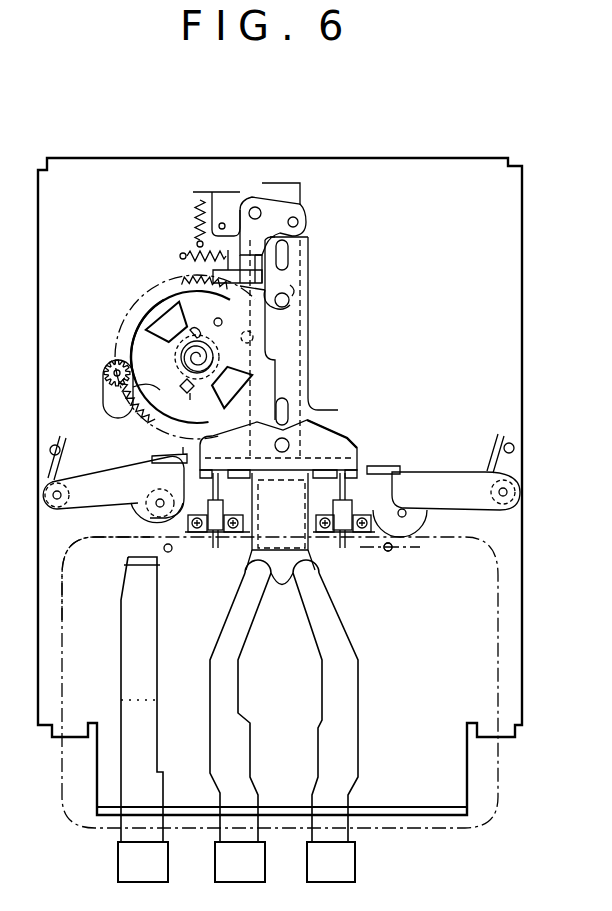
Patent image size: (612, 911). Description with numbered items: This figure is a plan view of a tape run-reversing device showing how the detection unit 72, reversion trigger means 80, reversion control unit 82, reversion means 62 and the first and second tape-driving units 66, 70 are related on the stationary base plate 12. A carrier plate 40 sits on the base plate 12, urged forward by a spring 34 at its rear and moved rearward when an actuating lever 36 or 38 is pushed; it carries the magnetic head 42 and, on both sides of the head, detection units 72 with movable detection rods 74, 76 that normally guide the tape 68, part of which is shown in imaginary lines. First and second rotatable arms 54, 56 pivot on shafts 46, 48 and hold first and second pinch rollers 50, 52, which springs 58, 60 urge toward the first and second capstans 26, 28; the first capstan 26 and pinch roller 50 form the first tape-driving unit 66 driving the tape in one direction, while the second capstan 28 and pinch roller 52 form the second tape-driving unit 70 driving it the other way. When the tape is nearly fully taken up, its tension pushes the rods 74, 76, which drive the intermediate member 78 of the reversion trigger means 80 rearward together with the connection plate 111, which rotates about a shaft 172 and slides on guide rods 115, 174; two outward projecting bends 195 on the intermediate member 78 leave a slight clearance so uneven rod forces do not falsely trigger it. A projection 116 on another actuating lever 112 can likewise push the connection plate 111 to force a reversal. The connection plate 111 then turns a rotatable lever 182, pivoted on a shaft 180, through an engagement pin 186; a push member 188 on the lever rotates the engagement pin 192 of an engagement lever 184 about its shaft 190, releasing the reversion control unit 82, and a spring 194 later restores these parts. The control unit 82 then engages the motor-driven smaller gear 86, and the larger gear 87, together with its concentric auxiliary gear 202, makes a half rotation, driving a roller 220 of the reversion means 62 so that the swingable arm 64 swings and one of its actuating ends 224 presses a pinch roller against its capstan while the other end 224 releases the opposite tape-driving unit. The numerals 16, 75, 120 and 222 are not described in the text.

The stationary base plate 12 is at (459, 183).
The base plate 16 is at (472, 795).
The first capstan 26 is at (392, 550).
The second capstan 28 is at (160, 562).
The spring 34 is at (197, 210).
The actuating lever 36 is at (228, 873).
The actuating lever 38 is at (318, 873).
The carrier plate 40 is at (220, 198).
The magnetic head 42 is at (280, 586).
The shaft 46 is at (515, 478).
The shaft 48 is at (45, 495).
The first pinch roller 50 is at (427, 516).
The second pinch roller 52 is at (125, 537).
The first rotatable arm 54 is at (467, 478).
The second rotatable arm 56 is at (131, 510).
The spring 58 is at (514, 449).
The spring 60 is at (48, 464).
The reversion means 62 is at (298, 425).
The swingable arm 64 is at (326, 425).
The first tape-driving unit 66 is at (420, 539).
The magnetic tape 68 is at (222, 548).
The second tape-driving unit 70 is at (150, 552).
The detection unit 72 is at (172, 550).
The detection rod 74 is at (342, 548).
The housing 75 is at (503, 373).
The detection rod 76 is at (214, 552).
The intermediate member 78 is at (358, 456).
The reversion trigger means 80 is at (316, 172).
The reversion control unit 82 is at (157, 281).
The smaller gear 86 is at (104, 365).
The larger gear 87 is at (148, 329).
The connection plate 111 is at (308, 352).
The actuating lever 112 is at (128, 873).
The rod 115 is at (290, 402).
The projection 116 is at (158, 498).
The notch 120 is at (292, 291).
The shaft 172 is at (318, 440).
The rod 174 is at (284, 240).
The shaft 180 is at (257, 207).
The rotatable lever 182 is at (277, 212).
The engagement lever 184 is at (289, 300).
The engagement pin 186 is at (298, 218).
The push member 188 is at (289, 262).
The shaft 190 is at (276, 308).
The engagement pin 192 is at (205, 290).
The spring 194 is at (198, 252).
The bend 195 is at (280, 521).
The auxiliary gear 202 is at (103, 395).
The roller 220 is at (193, 357).
The hub 222 is at (195, 360).
The actuating end 224 is at (178, 455).